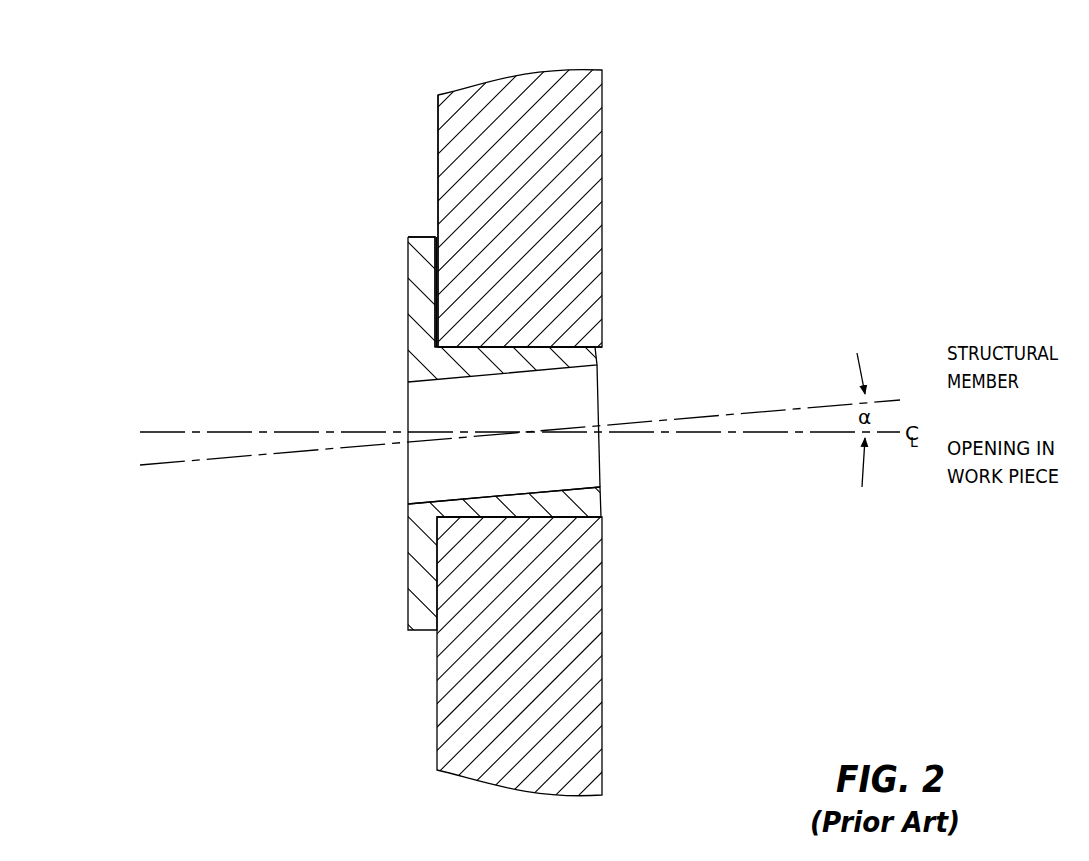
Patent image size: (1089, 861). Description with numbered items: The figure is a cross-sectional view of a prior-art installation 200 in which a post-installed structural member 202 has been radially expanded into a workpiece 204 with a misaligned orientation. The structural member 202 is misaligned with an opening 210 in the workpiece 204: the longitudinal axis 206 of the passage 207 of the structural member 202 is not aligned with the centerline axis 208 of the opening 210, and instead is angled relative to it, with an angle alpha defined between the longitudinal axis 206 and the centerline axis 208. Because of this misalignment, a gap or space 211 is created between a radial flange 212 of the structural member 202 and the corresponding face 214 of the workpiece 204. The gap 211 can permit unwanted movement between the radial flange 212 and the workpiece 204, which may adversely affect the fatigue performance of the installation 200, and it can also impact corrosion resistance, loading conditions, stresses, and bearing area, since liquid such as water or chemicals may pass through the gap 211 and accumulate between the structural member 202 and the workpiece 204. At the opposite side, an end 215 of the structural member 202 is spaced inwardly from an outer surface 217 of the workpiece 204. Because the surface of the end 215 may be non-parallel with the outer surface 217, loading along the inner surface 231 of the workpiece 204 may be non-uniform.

The installation 200 is at (752, 68).
The structural member 202 is at (597, 355).
The workpiece 204 is at (603, 135).
The longitudinal axis 206 is at (882, 397).
The passage 207 is at (600, 470).
The centerline axis 208 is at (885, 436).
The opening 210 is at (534, 347).
The gap or space 211 is at (436, 237).
The radial flange 212 is at (408, 275).
The face 214 is at (434, 120).
The end 215 is at (598, 392).
The outer surface 217 is at (603, 615).
The inner surface 231 is at (600, 517).